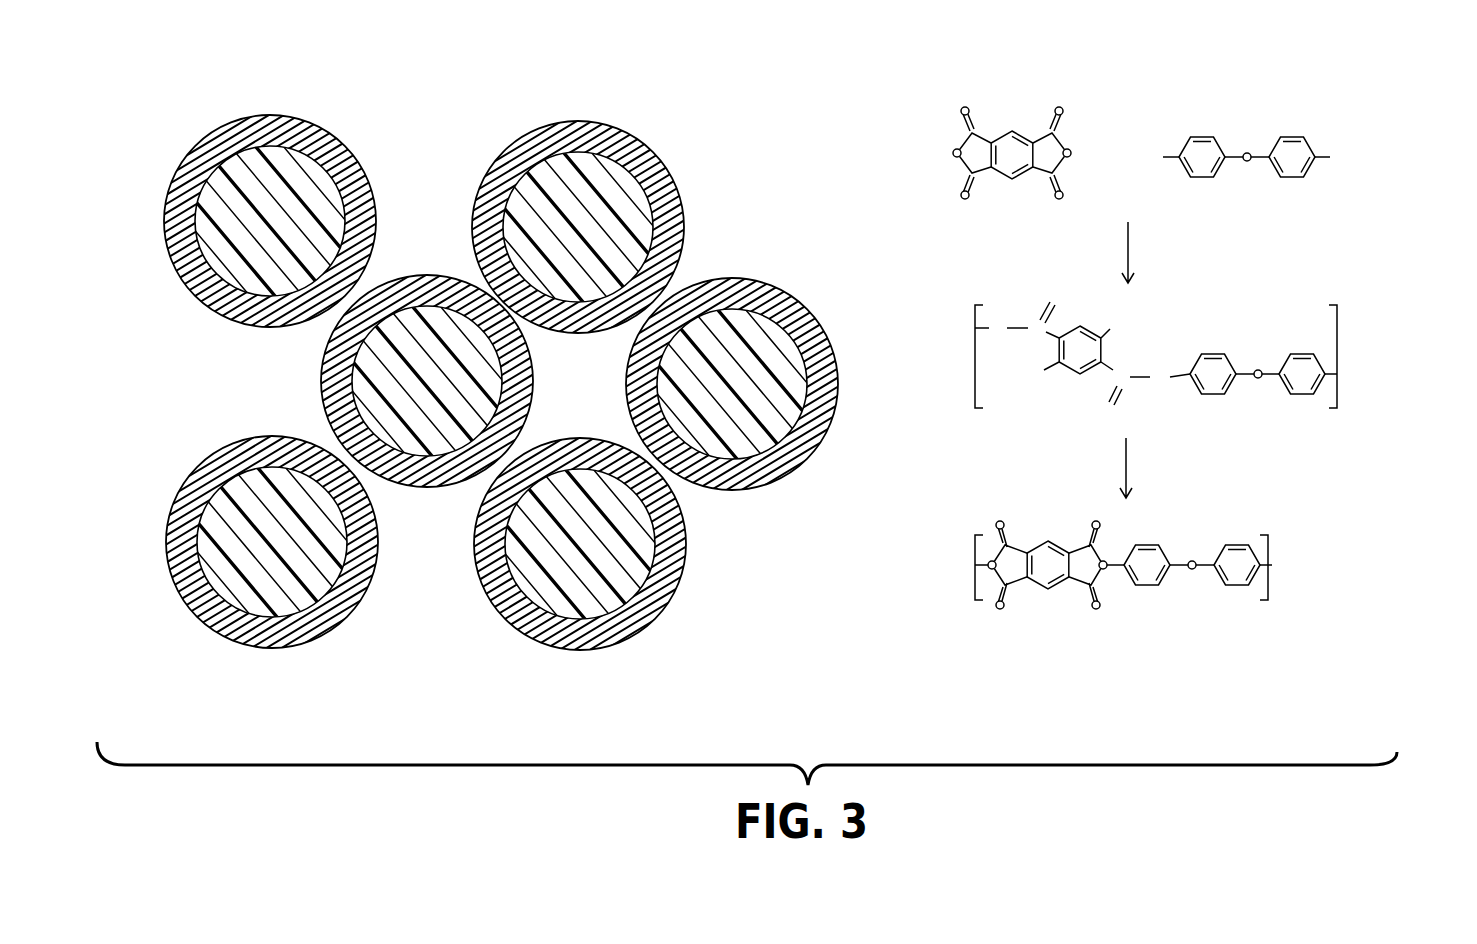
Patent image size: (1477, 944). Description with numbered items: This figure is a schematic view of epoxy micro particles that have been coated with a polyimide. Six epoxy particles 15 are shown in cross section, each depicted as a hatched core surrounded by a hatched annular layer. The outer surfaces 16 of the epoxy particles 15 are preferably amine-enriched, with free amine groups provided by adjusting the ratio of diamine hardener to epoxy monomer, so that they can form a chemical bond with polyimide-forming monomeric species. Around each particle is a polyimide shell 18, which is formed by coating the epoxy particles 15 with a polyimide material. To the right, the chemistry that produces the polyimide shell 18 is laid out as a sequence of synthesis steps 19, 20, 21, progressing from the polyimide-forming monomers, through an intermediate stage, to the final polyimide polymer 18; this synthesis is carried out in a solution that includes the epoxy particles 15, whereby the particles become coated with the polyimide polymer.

The epoxy particles 15 is at (268, 163).
The outer surfaces 16 is at (331, 147).
The polyimide shell 18 is at (360, 177).
The polyimide synthesis step 19 is at (1362, 121).
The polyimide synthesis step 20 is at (1364, 317).
The polyimide synthesis step 21 is at (1290, 522).